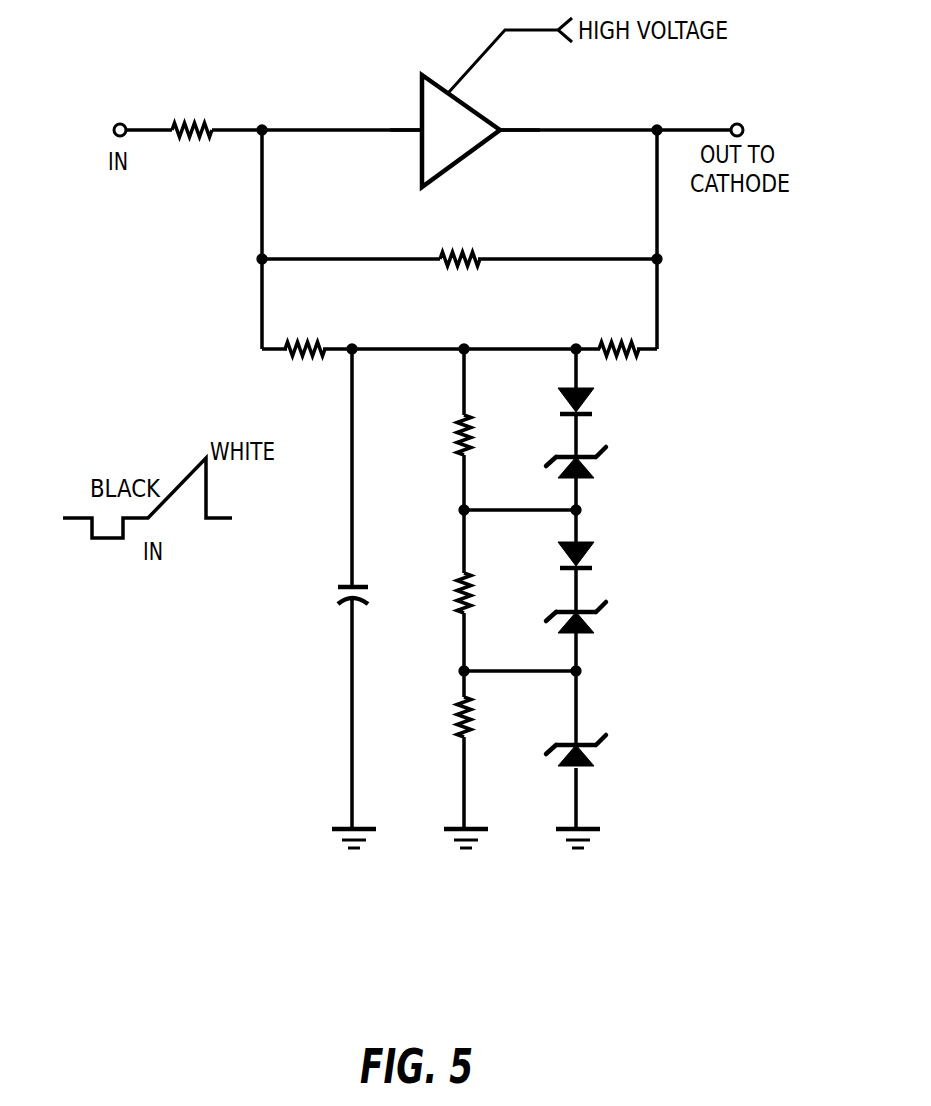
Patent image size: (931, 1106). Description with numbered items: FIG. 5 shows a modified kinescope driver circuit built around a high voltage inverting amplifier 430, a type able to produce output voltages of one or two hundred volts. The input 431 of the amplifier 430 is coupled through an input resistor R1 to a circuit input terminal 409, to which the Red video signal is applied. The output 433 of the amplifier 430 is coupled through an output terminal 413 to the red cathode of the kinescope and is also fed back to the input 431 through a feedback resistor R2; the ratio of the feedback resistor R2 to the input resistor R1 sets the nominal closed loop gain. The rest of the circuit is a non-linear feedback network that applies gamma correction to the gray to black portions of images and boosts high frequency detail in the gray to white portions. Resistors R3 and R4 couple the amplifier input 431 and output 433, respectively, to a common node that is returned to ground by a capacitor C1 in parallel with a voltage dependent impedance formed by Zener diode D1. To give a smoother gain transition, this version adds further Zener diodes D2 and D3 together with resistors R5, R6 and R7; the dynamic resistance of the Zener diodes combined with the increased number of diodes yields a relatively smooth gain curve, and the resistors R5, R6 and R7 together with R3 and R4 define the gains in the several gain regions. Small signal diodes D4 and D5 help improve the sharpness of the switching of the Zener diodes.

The circuit input terminal 409 is at (110, 128).
The output terminal 413 is at (737, 121).
The high voltage inverting amplifier 430 is at (477, 106).
The input of amplifier 431 is at (417, 131).
The output of amplifier 433 is at (502, 133).
The input resistor R1 is at (183, 128).
The feedback resistor R2 is at (450, 256).
The resistor R3 is at (296, 346).
The resistor R4 is at (636, 347).
The parallel resistor R5 is at (457, 432).
The parallel resistor R6 is at (458, 591).
The parallel resistor R7 is at (458, 709).
The capacitor C1 is at (340, 582).
The Zener diode D1 is at (594, 462).
The Zener diode D2 is at (594, 615).
The Zener diode D3 is at (594, 748).
The small signal diode D4 is at (590, 390).
The small signal diode D5 is at (590, 545).